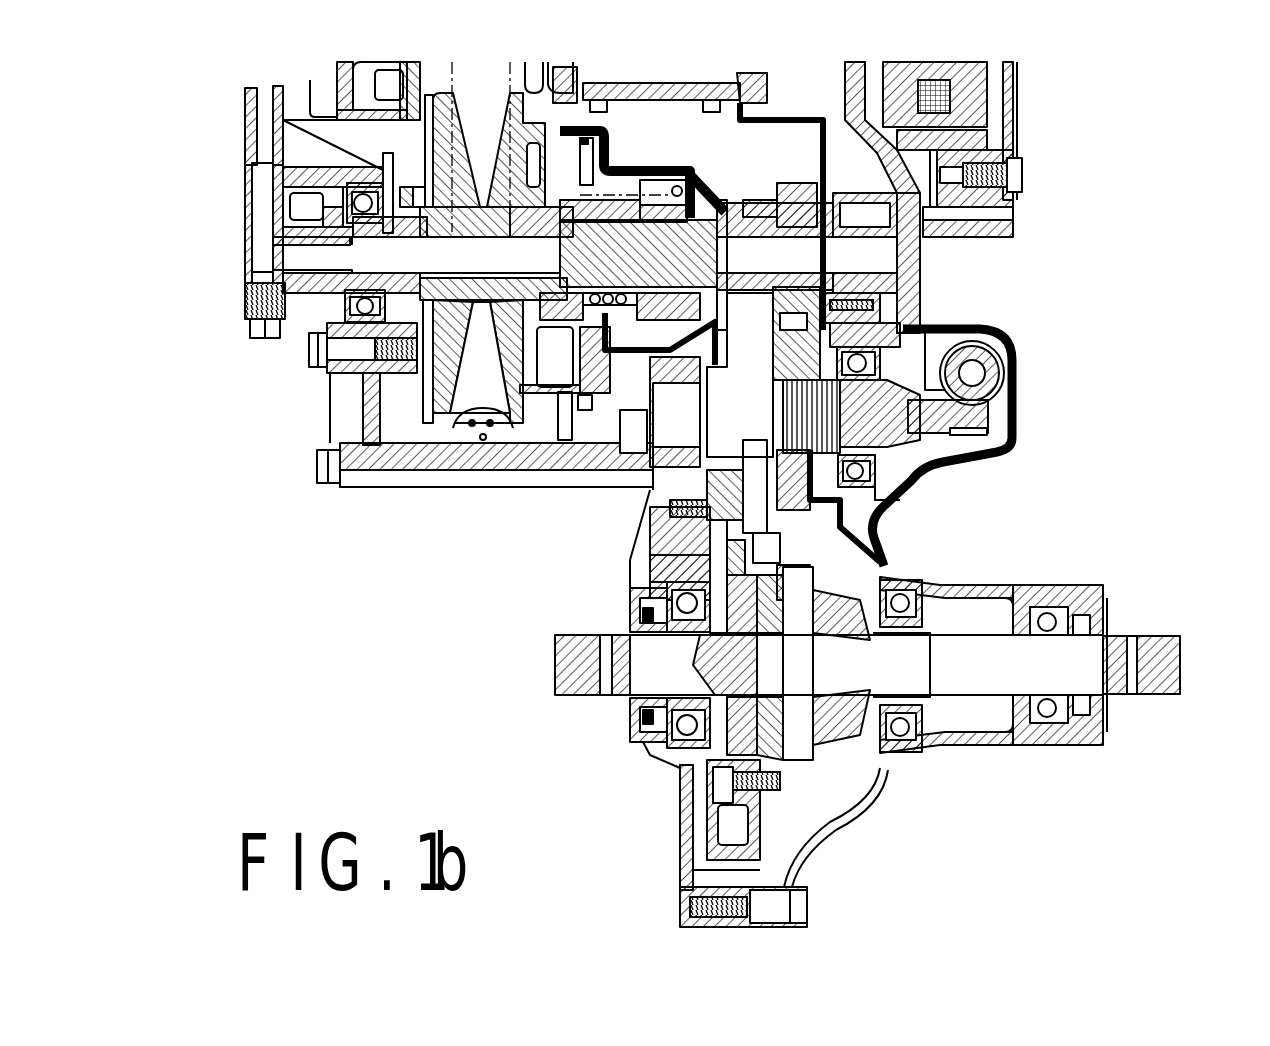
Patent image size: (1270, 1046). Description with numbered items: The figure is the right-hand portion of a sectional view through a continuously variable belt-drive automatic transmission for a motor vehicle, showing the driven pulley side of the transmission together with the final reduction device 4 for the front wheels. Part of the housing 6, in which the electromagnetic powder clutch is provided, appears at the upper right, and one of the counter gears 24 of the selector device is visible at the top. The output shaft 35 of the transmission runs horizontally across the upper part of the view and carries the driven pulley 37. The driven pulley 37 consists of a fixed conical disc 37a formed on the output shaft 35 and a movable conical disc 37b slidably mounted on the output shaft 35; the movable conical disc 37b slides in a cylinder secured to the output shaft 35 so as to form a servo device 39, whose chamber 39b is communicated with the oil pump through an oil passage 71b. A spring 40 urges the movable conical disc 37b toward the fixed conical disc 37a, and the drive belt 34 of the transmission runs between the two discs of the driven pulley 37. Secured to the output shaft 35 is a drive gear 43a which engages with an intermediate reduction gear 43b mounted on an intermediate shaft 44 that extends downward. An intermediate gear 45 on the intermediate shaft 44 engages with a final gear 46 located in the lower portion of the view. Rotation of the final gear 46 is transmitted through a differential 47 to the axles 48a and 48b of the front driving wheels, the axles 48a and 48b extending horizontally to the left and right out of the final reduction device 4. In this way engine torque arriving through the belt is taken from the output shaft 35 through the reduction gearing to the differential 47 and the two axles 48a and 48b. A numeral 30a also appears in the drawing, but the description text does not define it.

The final reduction device 4 is at (856, 570).
The housing 6 is at (973, 238).
The counter gears 24 is at (656, 98).
The bearing retainer wall 30a is at (610, 390).
The drive belt 34 is at (497, 441).
The output shaft 35 is at (653, 267).
The driven pulley 37 is at (438, 446).
The fixed conical disc 37a is at (433, 385).
The movable conical disc 37b is at (523, 392).
The servo device 39 is at (565, 396).
The chamber 39b is at (583, 402).
The spring 40 is at (555, 357).
The drive gear 43a is at (802, 186).
The intermediate reduction gear 43b is at (783, 508).
The intermediate shaft 44 is at (749, 437).
The intermediate gear 45 is at (750, 370).
The final gear 46 is at (710, 853).
The differential 47 is at (892, 577).
The axle 48a is at (575, 697).
The axle 48b is at (1160, 635).
The oil passage 71b is at (262, 207).